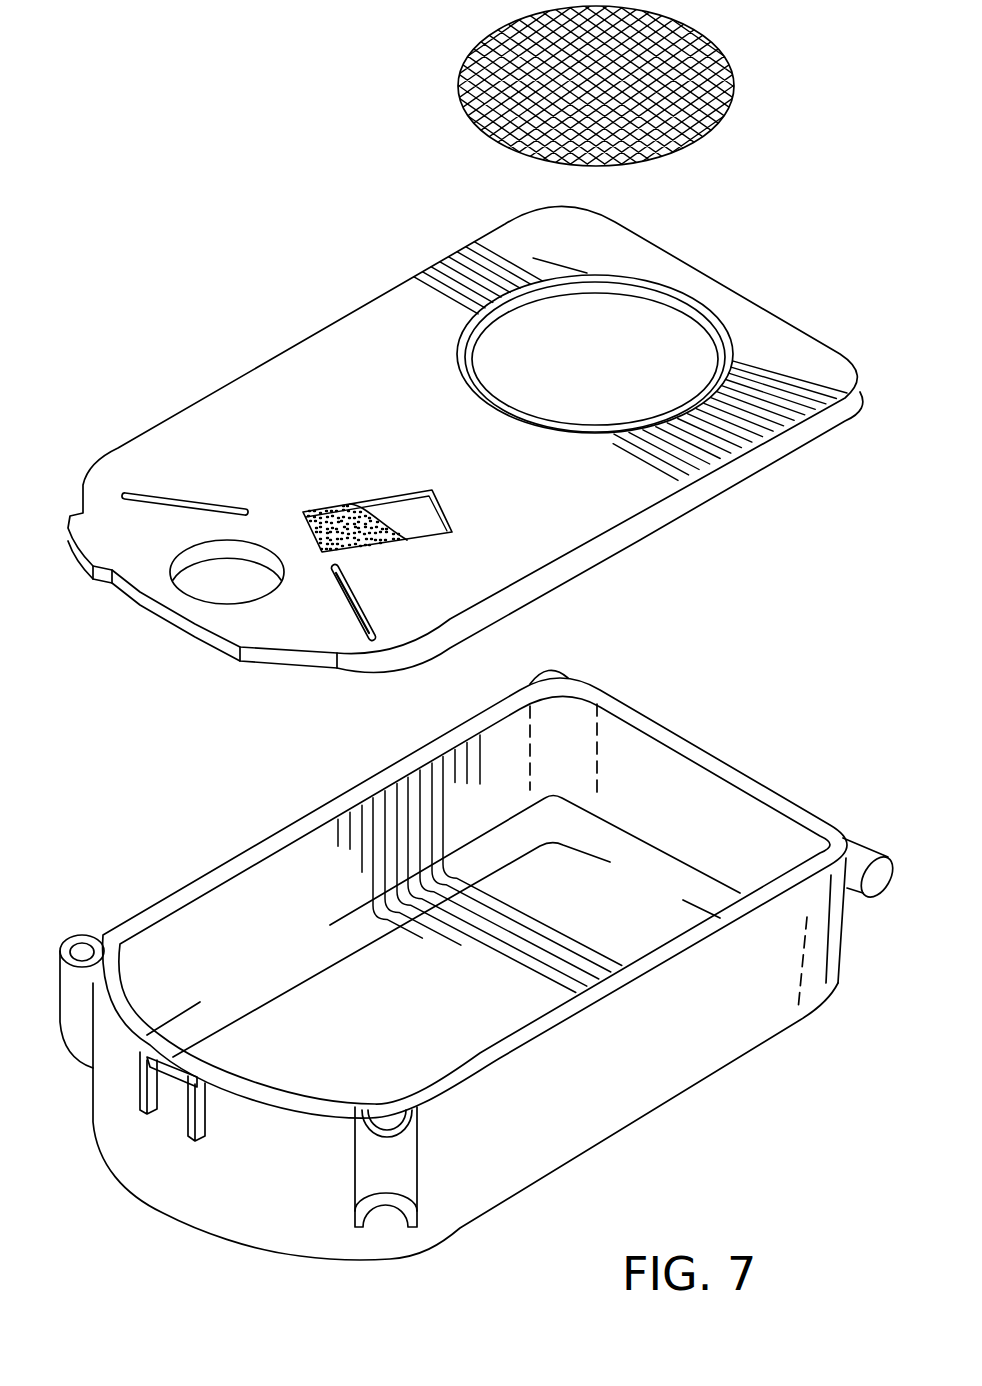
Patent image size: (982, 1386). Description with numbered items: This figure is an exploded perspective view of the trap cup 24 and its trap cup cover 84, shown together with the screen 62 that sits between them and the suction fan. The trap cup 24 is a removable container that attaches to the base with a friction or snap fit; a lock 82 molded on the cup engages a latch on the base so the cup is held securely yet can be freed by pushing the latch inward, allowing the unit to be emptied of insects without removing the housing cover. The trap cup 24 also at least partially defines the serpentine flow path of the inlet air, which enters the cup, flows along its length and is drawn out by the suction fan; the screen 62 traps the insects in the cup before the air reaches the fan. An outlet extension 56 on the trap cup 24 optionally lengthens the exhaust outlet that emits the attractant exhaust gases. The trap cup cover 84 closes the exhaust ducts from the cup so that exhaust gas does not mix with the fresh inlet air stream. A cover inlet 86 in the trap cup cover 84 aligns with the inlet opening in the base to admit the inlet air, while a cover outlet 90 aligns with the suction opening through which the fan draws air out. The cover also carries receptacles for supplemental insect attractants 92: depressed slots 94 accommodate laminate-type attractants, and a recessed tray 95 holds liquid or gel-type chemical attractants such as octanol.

The trap cup 24 is at (271, 890).
The outlet extension 56 is at (392, 1163).
The screen 62 is at (480, 44).
The lock 82 is at (187, 1103).
The trap cup cover 84 is at (296, 376).
The cover inlet 86 is at (211, 587).
The cover outlet 90 is at (609, 377).
The insect attractant 92 is at (337, 522).
The receptacles (depressed slots) 94 is at (178, 503).
The recessed tray 95 is at (423, 523).